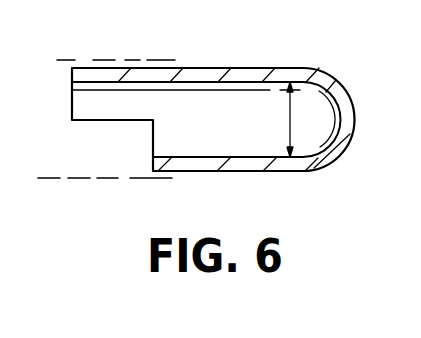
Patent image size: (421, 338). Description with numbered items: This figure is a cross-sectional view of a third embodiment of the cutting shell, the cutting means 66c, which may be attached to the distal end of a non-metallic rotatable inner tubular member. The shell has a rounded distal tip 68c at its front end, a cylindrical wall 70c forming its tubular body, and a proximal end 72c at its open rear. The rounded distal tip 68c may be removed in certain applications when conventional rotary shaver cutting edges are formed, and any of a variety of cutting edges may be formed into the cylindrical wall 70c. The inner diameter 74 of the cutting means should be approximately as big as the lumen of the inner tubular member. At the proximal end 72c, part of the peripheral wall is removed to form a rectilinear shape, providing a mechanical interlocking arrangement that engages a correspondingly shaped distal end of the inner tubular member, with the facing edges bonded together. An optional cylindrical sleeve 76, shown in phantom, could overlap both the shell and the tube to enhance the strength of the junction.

The cutting means 66c is at (323, 175).
The rounded distal tip 68c is at (343, 140).
The cylindrical wall 70c is at (237, 68).
The proximal end 72c is at (120, 68).
The inner diameter 74 is at (285, 110).
The cylindrical sleeve 76 is at (52, 29).